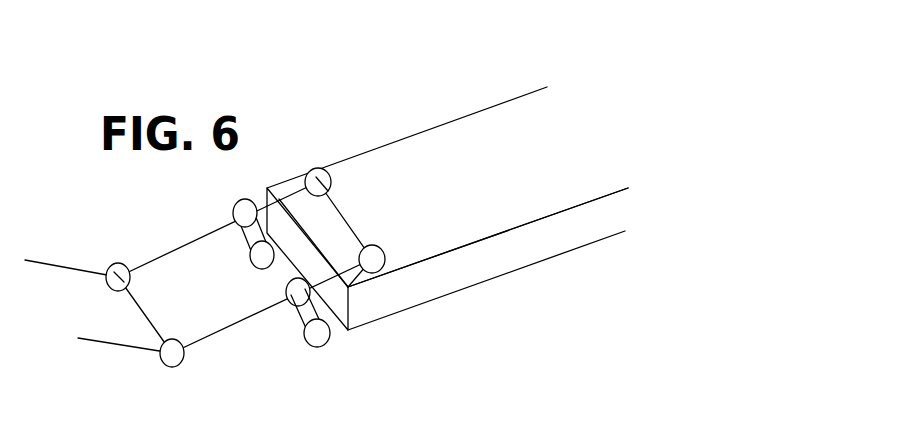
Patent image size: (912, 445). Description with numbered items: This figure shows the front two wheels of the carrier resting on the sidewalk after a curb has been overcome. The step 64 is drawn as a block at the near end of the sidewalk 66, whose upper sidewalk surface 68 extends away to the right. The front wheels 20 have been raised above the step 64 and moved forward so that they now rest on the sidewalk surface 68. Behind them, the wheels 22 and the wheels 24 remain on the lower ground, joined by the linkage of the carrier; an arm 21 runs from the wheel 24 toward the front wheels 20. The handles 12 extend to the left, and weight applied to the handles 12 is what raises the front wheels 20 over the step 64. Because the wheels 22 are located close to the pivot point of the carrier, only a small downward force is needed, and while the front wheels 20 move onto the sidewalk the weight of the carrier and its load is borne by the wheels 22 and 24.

The handles 12 is at (60, 262).
The front wheels 20 is at (317, 168).
The second arm 21 is at (240, 323).
The wheels 22 is at (321, 348).
The wheels 24 is at (172, 368).
The step 64 is at (338, 303).
The sidewalk 66 is at (471, 92).
The sidewalk surface 68 is at (442, 232).